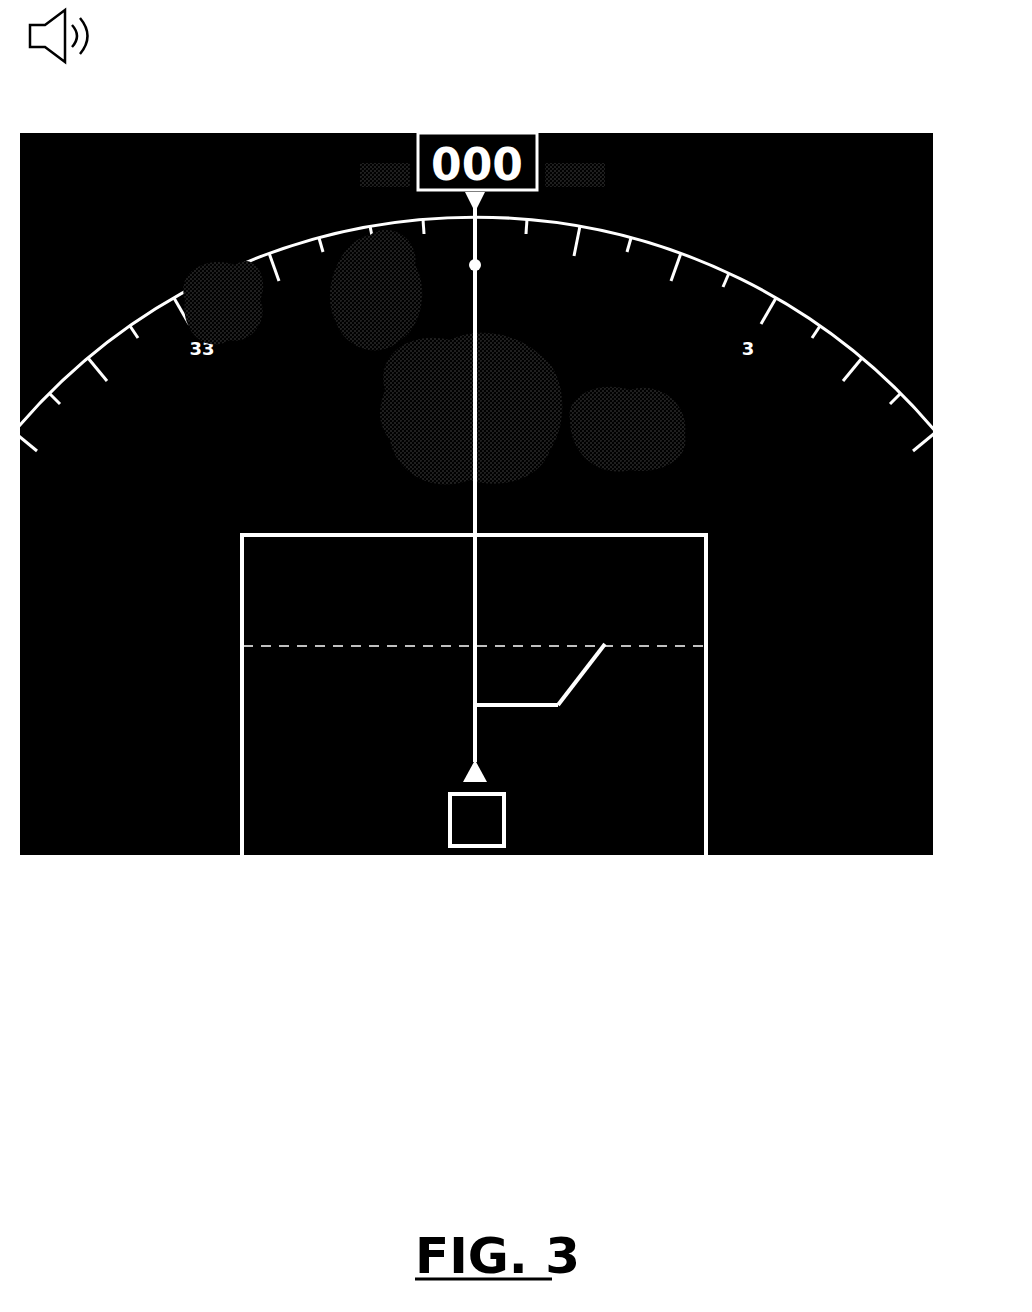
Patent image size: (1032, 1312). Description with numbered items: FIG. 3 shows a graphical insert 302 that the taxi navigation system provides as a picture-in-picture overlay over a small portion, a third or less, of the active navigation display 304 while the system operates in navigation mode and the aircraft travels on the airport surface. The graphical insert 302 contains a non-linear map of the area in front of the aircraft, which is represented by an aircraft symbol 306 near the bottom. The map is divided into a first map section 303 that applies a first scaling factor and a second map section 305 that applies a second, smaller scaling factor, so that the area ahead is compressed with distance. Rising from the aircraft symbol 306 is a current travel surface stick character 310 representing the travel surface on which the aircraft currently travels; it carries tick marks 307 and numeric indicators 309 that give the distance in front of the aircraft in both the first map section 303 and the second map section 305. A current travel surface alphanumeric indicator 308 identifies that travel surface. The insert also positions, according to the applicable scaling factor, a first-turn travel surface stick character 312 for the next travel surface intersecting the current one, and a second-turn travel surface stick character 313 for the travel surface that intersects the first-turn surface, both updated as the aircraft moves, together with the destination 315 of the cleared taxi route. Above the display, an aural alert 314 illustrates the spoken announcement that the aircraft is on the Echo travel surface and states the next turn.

The graphical insert 302 is at (711, 598).
The first map section 303 is at (474, 750).
The navigation display 304 is at (131, 694).
The second map section 305 is at (474, 591).
The aircraft symbol 306 is at (492, 781).
The tick marks 307 is at (480, 585).
The current travel surface alphanumeric indicator 308 is at (445, 812).
The numeric indicators 309 is at (412, 577).
The current travel surface stick character 310 is at (485, 620).
The first-turn travel surface stick character 312 is at (517, 710).
The second-turn travel surface stick character 313 is at (588, 678).
The aural alert 314 is at (340, 70).
The destination 315 is at (812, 815).